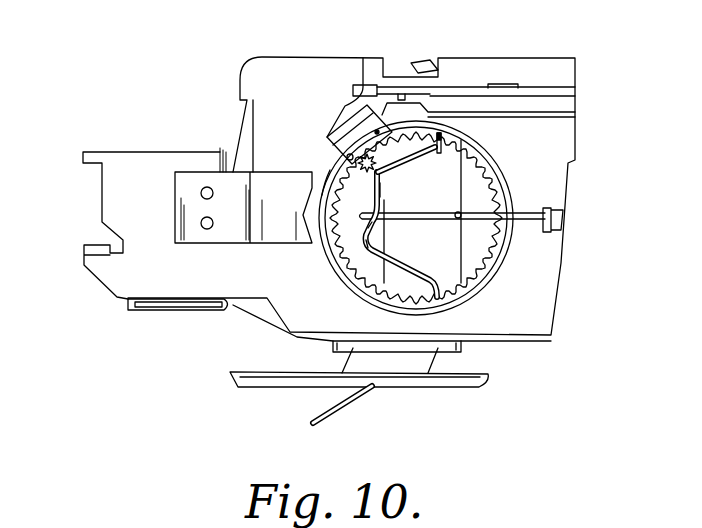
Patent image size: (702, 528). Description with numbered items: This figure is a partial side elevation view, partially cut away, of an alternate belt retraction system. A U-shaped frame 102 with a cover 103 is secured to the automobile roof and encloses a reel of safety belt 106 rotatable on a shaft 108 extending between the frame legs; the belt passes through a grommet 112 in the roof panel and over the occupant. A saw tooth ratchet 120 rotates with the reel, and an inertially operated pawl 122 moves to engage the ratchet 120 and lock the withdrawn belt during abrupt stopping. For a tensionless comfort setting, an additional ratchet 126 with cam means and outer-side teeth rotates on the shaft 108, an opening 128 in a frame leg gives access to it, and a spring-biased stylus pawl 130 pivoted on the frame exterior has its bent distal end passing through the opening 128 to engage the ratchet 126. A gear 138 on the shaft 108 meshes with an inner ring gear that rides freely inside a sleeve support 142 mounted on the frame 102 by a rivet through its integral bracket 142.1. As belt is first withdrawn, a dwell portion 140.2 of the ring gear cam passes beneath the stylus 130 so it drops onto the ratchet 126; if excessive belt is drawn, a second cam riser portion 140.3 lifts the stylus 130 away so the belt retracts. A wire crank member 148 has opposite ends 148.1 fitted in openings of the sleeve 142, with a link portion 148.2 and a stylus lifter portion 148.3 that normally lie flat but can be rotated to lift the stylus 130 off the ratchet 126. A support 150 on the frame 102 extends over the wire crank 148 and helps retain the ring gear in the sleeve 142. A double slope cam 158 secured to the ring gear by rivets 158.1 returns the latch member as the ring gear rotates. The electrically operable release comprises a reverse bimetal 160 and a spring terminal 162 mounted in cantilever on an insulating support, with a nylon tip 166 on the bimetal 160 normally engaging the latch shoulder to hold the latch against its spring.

The U-shaped frame 102 is at (118, 190).
The cover 103 is at (127, 306).
The reel of safety belt 106 is at (312, 420).
The shaft 108 is at (377, 157).
The grommet 112 is at (233, 376).
The saw tooth ratchet 120 is at (232, 135).
The inertially operated pawl 122 is at (427, 65).
The additional ratchet 126 is at (362, 214).
The opening 128 is at (382, 190).
The stylus pawl 130 is at (533, 228).
The gear 138 is at (388, 168).
The dwell portion 140.2 is at (482, 163).
The second cam riser portion 140.3 is at (342, 195).
The sleeve support 142 is at (508, 262).
The integral bracket 142.1 is at (490, 196).
The wire crank member 148 is at (398, 279).
The ends of wire crank 148.1 is at (443, 143).
The link portion 148.2 is at (350, 262).
The stylus lifter portion 148.3 is at (355, 228).
The support 150 is at (190, 177).
The double slope cam 158 is at (361, 105).
The rivets 158.1 is at (350, 112).
The reverse bimetal 160 is at (509, 80).
The spring terminal 162 is at (565, 108).
The tip 166 is at (364, 70).